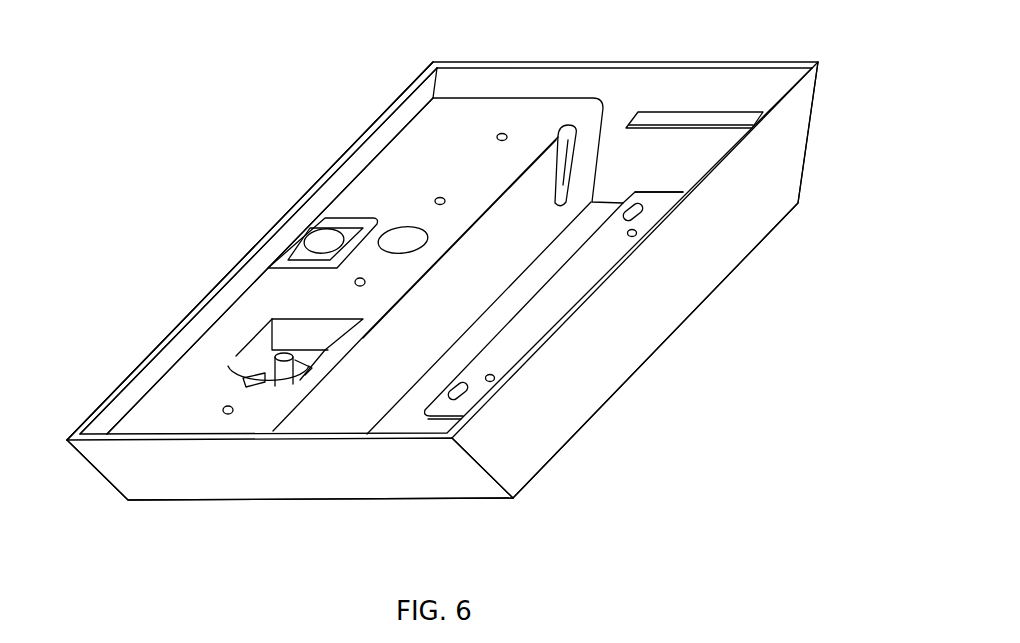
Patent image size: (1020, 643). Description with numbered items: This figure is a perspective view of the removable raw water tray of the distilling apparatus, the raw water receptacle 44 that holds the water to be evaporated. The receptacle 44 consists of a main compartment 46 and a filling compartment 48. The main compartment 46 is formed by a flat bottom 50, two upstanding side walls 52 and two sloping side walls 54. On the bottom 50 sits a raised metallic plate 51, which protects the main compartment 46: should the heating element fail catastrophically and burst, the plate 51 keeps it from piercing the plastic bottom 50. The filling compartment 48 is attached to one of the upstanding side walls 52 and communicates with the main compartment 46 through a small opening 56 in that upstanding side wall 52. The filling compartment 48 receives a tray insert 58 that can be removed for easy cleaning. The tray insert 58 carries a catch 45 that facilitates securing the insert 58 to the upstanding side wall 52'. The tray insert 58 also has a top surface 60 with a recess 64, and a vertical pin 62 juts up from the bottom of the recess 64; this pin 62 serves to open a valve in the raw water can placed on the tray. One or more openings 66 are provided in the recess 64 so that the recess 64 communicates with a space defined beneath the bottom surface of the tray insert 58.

The raw water receptacle 44 is at (312, 568).
The catch 45 is at (296, 251).
The main compartment 46 is at (543, 308).
The filling compartment 48 is at (268, 292).
The flat bottom 50 is at (481, 336).
The raised metallic plate 51 is at (602, 266).
The upstanding side wall 52 is at (612, 280).
The upstanding side wall 52' is at (250, 251).
The sloping side wall 54 is at (732, 83).
The small opening 56 is at (597, 107).
The tray insert 58 is at (460, 124).
The top surface 60 is at (378, 192).
The vertical pin 62 is at (285, 380).
The recess 64 is at (267, 365).
The openings 66 is at (232, 372).